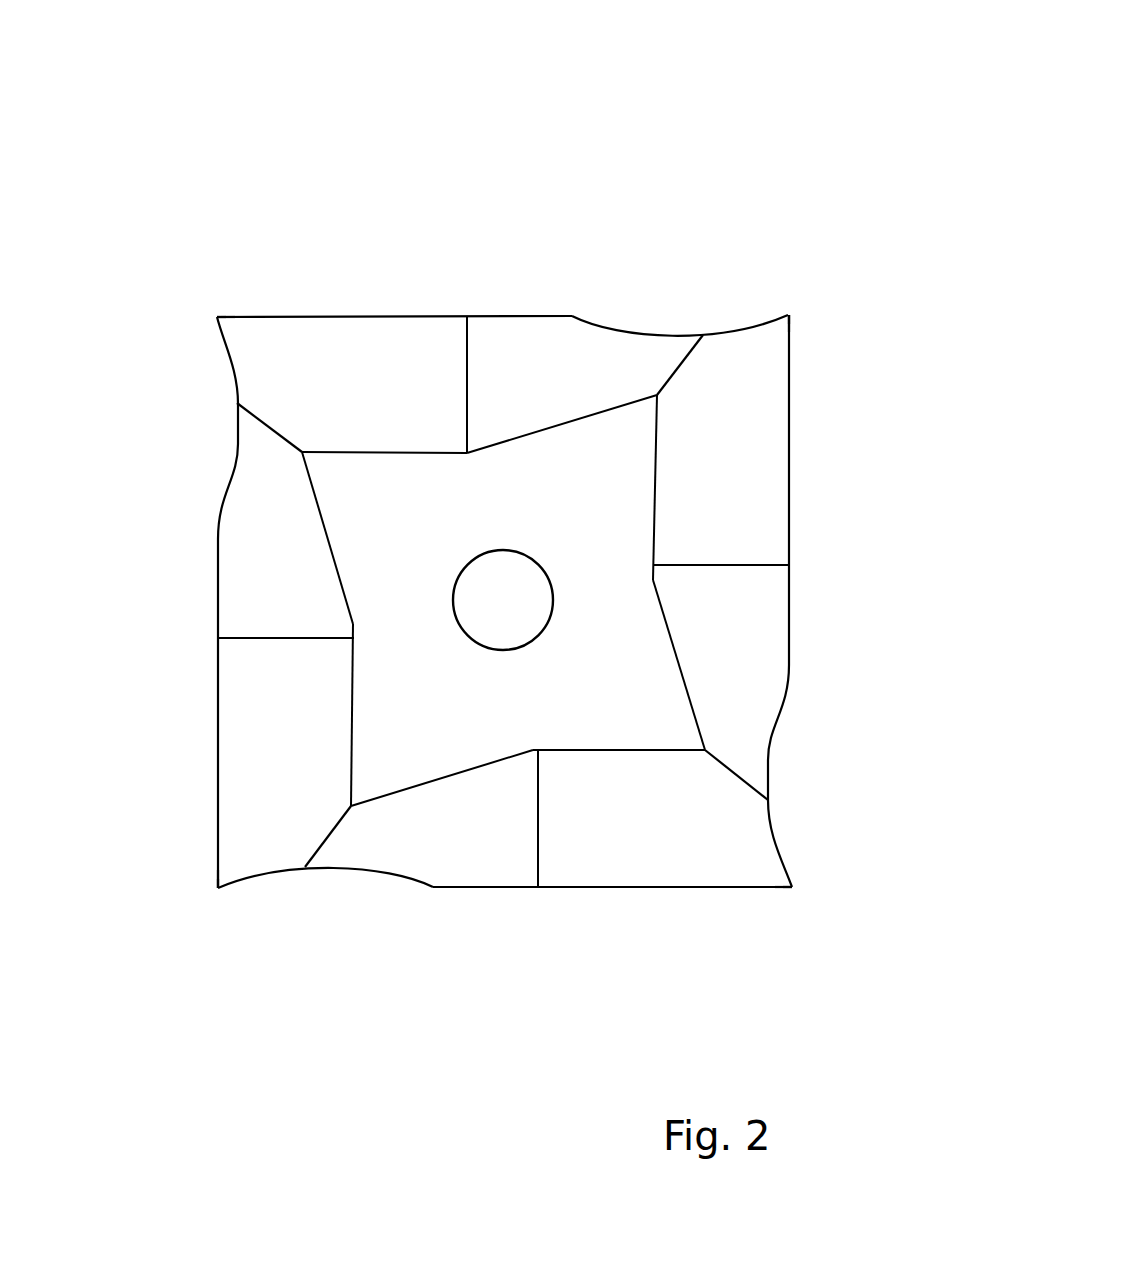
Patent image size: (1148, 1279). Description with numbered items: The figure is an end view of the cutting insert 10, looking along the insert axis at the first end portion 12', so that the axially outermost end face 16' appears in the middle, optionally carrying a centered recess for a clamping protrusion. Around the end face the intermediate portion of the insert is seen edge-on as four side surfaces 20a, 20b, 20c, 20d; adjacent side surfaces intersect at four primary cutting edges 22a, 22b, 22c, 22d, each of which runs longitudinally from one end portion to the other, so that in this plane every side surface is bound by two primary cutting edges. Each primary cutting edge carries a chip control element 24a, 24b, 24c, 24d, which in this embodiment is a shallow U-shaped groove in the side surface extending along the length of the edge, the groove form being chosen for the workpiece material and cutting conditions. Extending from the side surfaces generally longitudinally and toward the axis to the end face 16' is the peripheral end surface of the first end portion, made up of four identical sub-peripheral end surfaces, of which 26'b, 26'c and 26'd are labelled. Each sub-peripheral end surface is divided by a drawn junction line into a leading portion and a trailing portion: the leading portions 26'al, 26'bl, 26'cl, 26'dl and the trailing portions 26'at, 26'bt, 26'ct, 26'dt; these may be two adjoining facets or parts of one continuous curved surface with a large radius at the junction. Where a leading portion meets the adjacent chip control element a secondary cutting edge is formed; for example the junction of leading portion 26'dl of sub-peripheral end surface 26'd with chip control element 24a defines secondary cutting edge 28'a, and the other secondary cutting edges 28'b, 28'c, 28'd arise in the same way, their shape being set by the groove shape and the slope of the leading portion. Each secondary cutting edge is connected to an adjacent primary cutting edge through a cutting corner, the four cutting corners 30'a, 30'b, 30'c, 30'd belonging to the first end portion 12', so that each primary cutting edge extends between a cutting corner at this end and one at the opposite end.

The cutting insert 10 is at (572, 125).
The first end portion 12' is at (608, 988).
The end face 16' is at (545, 773).
The side surface 20a is at (417, 258).
The side surface 20b is at (182, 600).
The side surface 20c is at (547, 950).
The side surface 20d is at (832, 567).
The primary cutting edge 22a is at (792, 315).
The primary cutting edge 22b is at (213, 310).
The primary cutting edge 22c is at (218, 888).
The primary cutting edge 22d is at (797, 897).
The chip control element 24a is at (653, 285).
The chip control element 24b is at (213, 428).
The chip control element 24c is at (312, 887).
The chip control element 24d is at (788, 747).
The leading portion of sub-peripheral end surface 26'al is at (383, 349).
The trailing portion of sub-peripheral end surface 26'at is at (562, 351).
The sub-peripheral end surface 26'b is at (224, 678).
The trailing portion of sub-peripheral end surface 26'bt is at (219, 538).
The leading portion of sub-peripheral end surface 26'bl is at (233, 723).
The sub-peripheral end surface 26'c is at (506, 852).
The trailing portion of sub-peripheral end surface 26'ct is at (442, 843).
The leading portion of sub-peripheral end surface 26'cl is at (637, 859).
The sub-peripheral end surface 26'd is at (772, 510).
The leading portion of sub-peripheral end surface 26'dl is at (772, 485).
The trailing portion of sub-peripheral end surface 26'dt is at (779, 665).
The secondary cutting edge 28'a is at (718, 301).
The secondary cutting edge 28'b is at (200, 405).
The secondary cutting edge 28'c is at (299, 881).
The secondary cutting edge 28'd is at (803, 797).
The cutting corner 30'a is at (853, 328).
The cutting corner 30'b is at (153, 307).
The cutting corner 30'c is at (150, 892).
The cutting corner 30'd is at (851, 895).